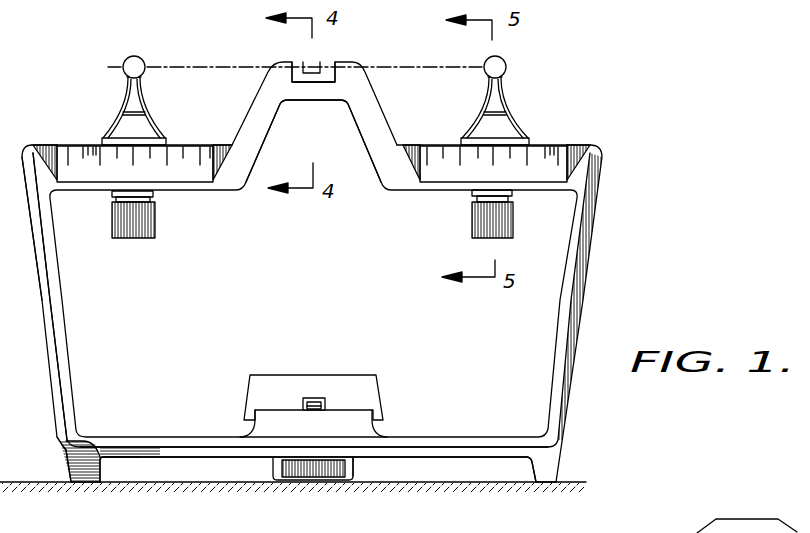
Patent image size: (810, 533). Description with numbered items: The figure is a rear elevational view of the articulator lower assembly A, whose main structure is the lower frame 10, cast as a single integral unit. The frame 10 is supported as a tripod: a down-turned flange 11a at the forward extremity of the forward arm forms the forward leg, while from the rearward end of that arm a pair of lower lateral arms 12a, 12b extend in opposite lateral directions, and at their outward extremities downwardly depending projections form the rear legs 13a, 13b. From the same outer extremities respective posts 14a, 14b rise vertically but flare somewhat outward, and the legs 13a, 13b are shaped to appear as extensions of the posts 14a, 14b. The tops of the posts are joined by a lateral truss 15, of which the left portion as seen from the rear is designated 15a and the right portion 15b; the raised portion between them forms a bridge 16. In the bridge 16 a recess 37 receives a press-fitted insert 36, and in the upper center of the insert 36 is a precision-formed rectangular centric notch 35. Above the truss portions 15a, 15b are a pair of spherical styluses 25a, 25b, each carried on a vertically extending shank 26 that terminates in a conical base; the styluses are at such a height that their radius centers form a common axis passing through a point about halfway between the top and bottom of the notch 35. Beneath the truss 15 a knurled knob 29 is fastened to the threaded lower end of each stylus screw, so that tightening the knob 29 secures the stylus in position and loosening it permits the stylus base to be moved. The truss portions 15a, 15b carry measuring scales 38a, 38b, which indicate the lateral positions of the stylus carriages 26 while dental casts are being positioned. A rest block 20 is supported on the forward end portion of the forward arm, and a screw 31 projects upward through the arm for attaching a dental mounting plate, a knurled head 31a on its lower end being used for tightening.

The lower frame 10 is at (92, 354).
The down-turned flange 11a is at (352, 465).
The lateral arm 12a is at (143, 443).
The lateral arm 12b is at (457, 452).
The rear leg 13a is at (80, 465).
The rear leg 13b is at (540, 465).
The post 14a is at (57, 387).
The post 14b is at (568, 420).
The lateral truss 15 is at (376, 178).
The left lateral truss portion 15a is at (197, 178).
The right lateral truss portion 15b is at (460, 175).
The bridge 16 is at (367, 112).
The rest block 20 is at (348, 375).
The spherical stylus 25a is at (137, 56).
The spherical stylus 25b is at (507, 67).
The shank 26 is at (118, 128).
The knurled knob 29 is at (138, 238).
The screw 31 is at (303, 400).
The knurled head 31a is at (302, 472).
The centric notch 35 is at (314, 62).
The insert 36 is at (319, 88).
The recess 37 is at (297, 66).
The measuring scale 38a is at (167, 150).
The measuring scale 38b is at (527, 153).
The lower assembly A is at (640, 114).